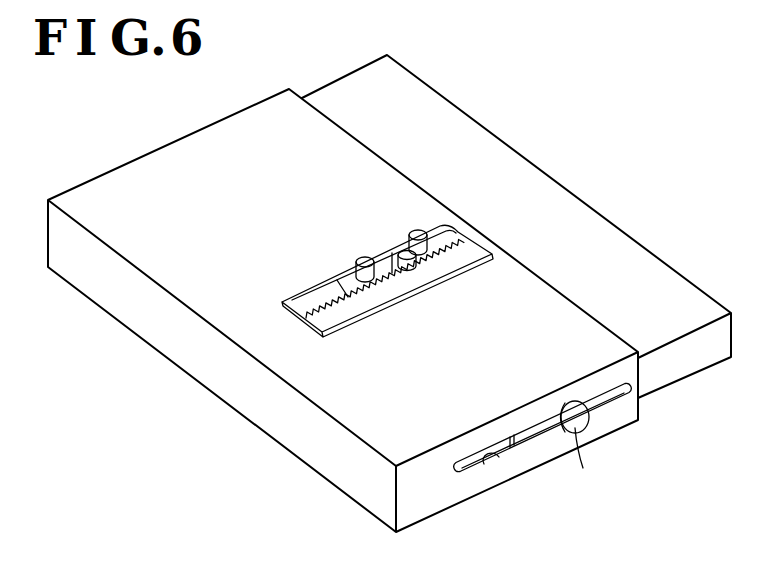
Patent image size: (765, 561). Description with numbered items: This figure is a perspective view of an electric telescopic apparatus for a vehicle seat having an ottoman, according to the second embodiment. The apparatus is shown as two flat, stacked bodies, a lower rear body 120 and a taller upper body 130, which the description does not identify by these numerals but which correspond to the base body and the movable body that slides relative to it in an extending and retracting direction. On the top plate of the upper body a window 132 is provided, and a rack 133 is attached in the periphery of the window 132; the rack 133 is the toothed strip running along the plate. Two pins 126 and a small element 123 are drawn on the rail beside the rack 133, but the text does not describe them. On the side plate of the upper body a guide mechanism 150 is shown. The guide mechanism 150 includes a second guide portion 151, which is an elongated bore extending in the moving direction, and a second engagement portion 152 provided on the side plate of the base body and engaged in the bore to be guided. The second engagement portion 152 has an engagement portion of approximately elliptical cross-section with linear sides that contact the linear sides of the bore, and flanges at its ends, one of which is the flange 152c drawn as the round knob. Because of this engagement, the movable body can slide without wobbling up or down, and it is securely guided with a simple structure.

The main body / casing 120 is at (592, 208).
The stage block 130 is at (230, 407).
The window 132 is at (292, 296).
The rack 133 is at (388, 293).
The pins 126 is at (358, 261).
The engaging element 123 is at (403, 248).
The guide mechanism 150 is at (541, 446).
The second guide portion 151 is at (487, 463).
The second engagement portion 152 is at (592, 425).
The flange 152c is at (593, 463).